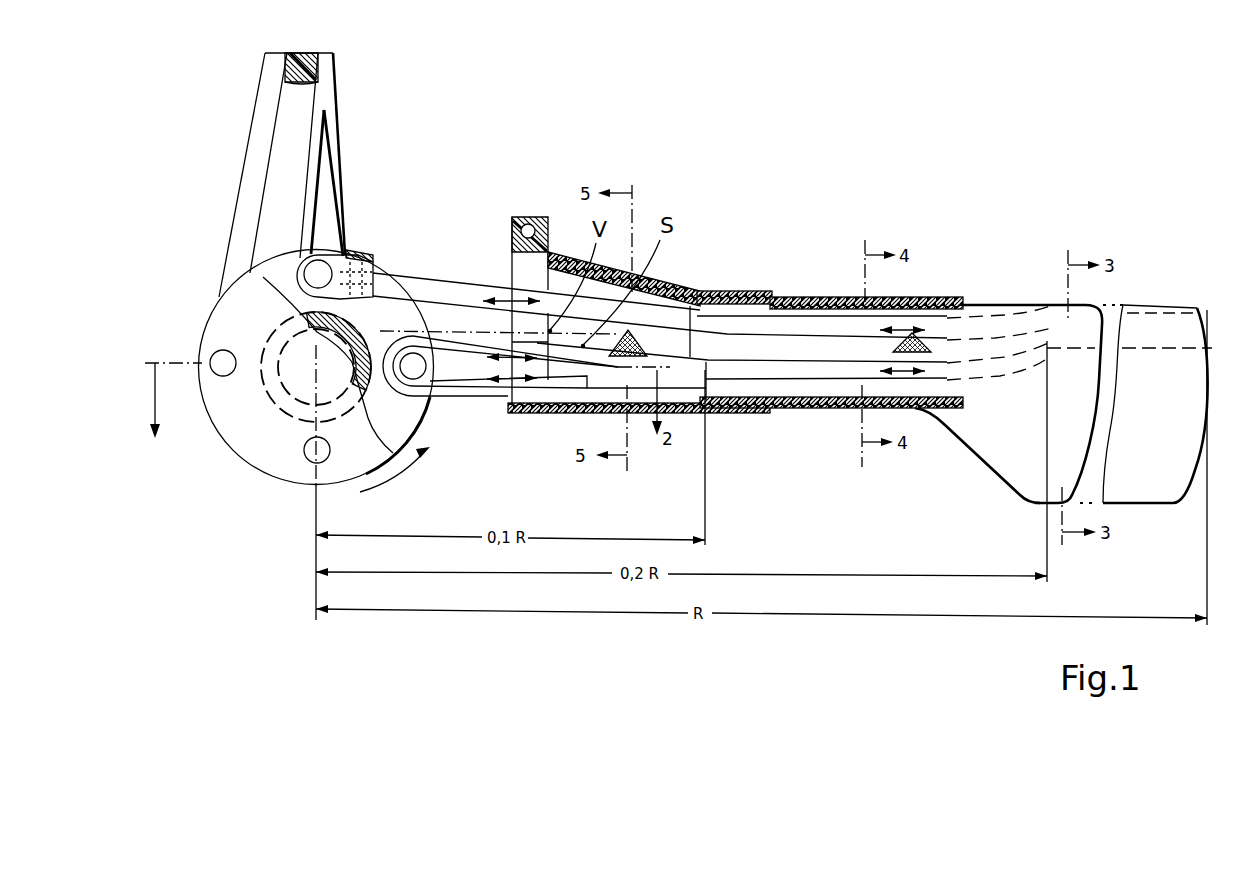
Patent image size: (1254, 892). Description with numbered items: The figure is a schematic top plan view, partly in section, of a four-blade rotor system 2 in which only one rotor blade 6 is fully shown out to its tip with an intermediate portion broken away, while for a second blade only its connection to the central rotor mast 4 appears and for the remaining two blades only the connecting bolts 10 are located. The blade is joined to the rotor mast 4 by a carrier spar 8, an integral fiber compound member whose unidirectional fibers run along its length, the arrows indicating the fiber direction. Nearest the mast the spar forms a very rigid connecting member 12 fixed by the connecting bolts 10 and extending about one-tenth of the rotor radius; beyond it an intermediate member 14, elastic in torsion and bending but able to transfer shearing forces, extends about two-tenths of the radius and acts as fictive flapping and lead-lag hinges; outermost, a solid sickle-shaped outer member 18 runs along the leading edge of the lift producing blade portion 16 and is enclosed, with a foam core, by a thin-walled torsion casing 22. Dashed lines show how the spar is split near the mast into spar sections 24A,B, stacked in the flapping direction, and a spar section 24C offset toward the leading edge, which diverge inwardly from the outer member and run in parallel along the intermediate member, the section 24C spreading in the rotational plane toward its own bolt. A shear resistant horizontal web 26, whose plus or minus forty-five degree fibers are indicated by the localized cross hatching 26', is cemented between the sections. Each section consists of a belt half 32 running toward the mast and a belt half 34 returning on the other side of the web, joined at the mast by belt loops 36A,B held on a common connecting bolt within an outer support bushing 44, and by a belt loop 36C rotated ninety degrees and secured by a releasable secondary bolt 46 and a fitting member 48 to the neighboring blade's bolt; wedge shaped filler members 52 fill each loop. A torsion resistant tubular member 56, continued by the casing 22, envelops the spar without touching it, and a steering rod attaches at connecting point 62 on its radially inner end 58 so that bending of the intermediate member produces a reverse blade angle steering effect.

The rotor system 2 is at (778, 106).
The rotor mast 4 is at (206, 284).
The rotor blade 6 is at (1031, 270).
The carrier spar 8 is at (752, 322).
The connecting bolts 10 is at (228, 372).
The connecting member 12 is at (350, 106).
The intermediate member 14 is at (921, 318).
The lift producing blade portion 16 is at (1147, 378).
The outer member 18 is at (1183, 330).
The torsion casing 22 is at (852, 300).
The spar section 24C is at (793, 327).
The spar sections 24A,B is at (828, 366).
The horizontal web 26 is at (721, 289).
The cross hatching 26' is at (770, 300).
The belt half 32 is at (462, 362).
The belt half 34 is at (470, 370).
The belt loops 36A,B is at (328, 210).
The belt loop 36C is at (243, 240).
The support bushing 44 is at (438, 463).
The secondary bolt 46 is at (364, 256).
The fitting member 48 is at (351, 253).
The wedge shaped filler members 52 is at (323, 175).
The tubular member 56 is at (690, 295).
The radially inner end 58 is at (520, 222).
The connecting point 62 is at (541, 226).